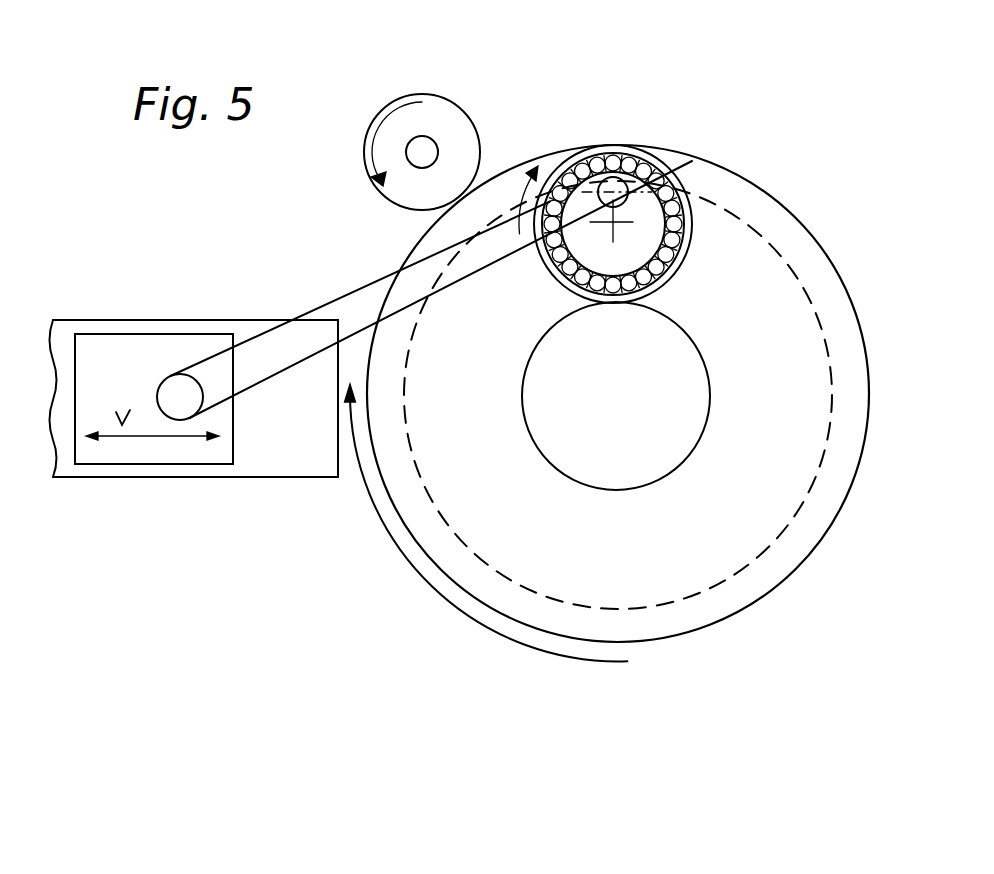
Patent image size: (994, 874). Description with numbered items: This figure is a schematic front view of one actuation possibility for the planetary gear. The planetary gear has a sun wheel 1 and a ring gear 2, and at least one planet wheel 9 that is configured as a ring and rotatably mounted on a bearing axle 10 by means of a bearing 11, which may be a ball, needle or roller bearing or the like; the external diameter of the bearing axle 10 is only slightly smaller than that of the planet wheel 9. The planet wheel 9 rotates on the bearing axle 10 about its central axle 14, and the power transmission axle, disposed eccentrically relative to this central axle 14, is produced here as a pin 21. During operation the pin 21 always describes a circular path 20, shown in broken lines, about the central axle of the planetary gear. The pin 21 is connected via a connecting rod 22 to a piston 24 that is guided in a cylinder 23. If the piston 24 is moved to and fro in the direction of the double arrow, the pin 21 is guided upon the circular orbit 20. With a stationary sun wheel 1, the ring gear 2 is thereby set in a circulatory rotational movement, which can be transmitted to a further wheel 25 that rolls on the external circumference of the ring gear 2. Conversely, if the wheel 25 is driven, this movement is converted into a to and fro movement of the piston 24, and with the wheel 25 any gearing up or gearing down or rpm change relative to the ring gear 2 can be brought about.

The sun wheel 1 is at (658, 443).
The ring gear 2 is at (789, 208).
The planet wheel 9 is at (643, 157).
The bearing axle 10 is at (640, 240).
The bearing 11 is at (580, 173).
The central axle 14 is at (692, 161).
The circular path 20 is at (723, 217).
The pin 21 is at (613, 183).
The connecting rod 22 is at (360, 290).
The cylinder 23 is at (145, 321).
The piston 24 is at (116, 453).
The further wheel 25 is at (457, 172).